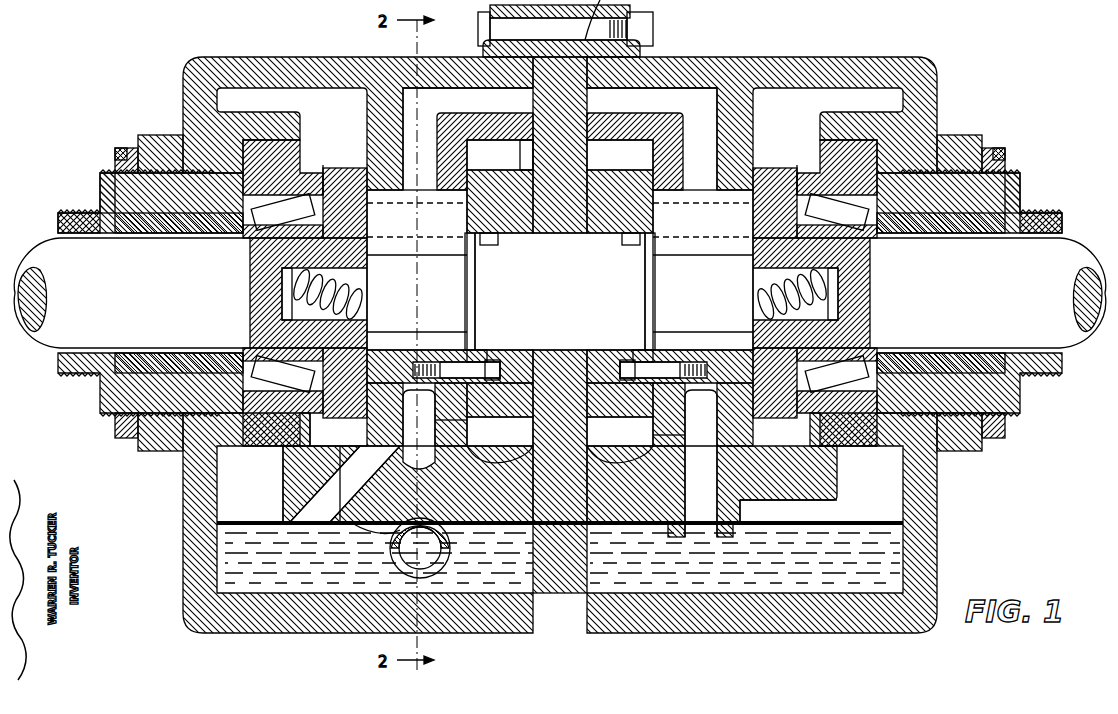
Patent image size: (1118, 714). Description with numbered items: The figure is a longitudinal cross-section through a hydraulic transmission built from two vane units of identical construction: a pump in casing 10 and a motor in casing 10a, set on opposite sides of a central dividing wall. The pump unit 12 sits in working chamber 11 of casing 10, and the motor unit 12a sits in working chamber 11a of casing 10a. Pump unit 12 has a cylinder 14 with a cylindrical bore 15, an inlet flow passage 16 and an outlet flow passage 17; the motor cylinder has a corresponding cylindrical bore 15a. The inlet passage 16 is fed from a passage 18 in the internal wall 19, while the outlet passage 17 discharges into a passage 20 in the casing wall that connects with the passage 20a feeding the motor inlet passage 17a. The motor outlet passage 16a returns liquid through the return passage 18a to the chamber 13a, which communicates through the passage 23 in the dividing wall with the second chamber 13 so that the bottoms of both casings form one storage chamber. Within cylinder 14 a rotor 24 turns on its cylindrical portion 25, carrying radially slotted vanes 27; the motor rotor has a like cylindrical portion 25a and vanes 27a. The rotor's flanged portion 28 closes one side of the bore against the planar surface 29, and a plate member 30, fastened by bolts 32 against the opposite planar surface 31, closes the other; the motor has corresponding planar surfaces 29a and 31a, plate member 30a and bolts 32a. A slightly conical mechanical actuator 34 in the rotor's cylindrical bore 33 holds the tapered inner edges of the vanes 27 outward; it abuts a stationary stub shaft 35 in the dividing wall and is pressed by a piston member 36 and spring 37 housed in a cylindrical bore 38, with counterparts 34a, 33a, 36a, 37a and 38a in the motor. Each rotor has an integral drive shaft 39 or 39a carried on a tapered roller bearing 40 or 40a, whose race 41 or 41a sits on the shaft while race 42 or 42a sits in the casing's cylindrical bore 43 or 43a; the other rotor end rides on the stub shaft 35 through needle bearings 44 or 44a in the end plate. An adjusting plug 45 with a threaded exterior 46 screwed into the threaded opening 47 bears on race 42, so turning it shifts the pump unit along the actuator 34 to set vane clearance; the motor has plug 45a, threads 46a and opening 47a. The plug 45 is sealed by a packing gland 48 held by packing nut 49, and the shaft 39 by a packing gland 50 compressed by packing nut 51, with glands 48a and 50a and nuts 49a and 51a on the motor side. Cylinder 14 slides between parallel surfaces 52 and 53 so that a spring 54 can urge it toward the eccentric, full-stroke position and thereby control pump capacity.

The casing 10 is at (291, 64).
The casing 10a is at (842, 64).
The working chamber 11 is at (487, 170).
The working chamber 11a is at (636, 170).
The vane type pump unit 12 is at (358, 173).
The motor unit 12a is at (760, 173).
The second chamber 13 is at (228, 492).
The chamber 13a is at (905, 503).
The cylinder 14 is at (468, 432).
The cylindrical bore 15 is at (419, 418).
The oil passage 15a is at (701, 418).
The inlet flow passage 16 is at (464, 440).
The outlet passage 16a is at (728, 432).
The outlet flow passage 17 is at (500, 150).
The inlet passage 17a is at (648, 150).
The passage 18 is at (333, 493).
The return passage 18a is at (745, 506).
The internal wall 19 is at (483, 496).
The passage 20 is at (475, 95).
The passage 20a is at (650, 95).
The passage 23 is at (560, 595).
The rotor 24 is at (340, 420).
The cylindrical portion 25 is at (410, 356).
The cylindrical portion 25a is at (712, 350).
The vane 27 is at (395, 212).
The vane 27a is at (725, 192).
The flanged portion 28 is at (358, 420).
The planar surface 29 is at (378, 484).
The planar surface 29a is at (758, 444).
The plate member 30 is at (505, 416).
The plate member 30a is at (620, 400).
The planar surface 31 is at (440, 420).
The planar surface 31a is at (650, 436).
The bolts 32 is at (485, 370).
The bolts 32a is at (642, 362).
The cylindrical bore 33 is at (468, 348).
The cylindrical bore 33a is at (652, 348).
The mechanical actuator 34 is at (462, 276).
The mechanical actuator 34a is at (656, 300).
The stub shaft 35 is at (561, 302).
The piston member 36 is at (360, 278).
The piston member 36a is at (780, 294).
The spring 37 is at (362, 288).
The spring 37a is at (774, 294).
The cylindrical bore 38 is at (282, 318).
The cylindrical bore 38a is at (838, 310).
The drive shaft 39 is at (56, 348).
The drive shaft 39a is at (1035, 320).
The tapered roller bearing 40 is at (283, 200).
The tapered roller bearing 40a is at (862, 204).
The race 41 is at (246, 238).
The race 41a is at (872, 238).
The race 42 is at (252, 180).
The race 42a is at (835, 178).
The cylindrical bore 43 is at (322, 168).
The cylindrical bore 43a is at (797, 165).
The needle bearings 44 is at (510, 234).
The needle bearings 44a is at (636, 236).
The plug 45 is at (100, 180).
The plug 45a is at (1020, 214).
The threaded exterior 46 is at (107, 174).
The threaded exterior 46a is at (1014, 176).
The threaded opening 47 is at (166, 136).
The threaded opening 47a is at (950, 137).
The packing gland 48 is at (128, 148).
The packing gland 48a is at (990, 148).
The packing nut 49 is at (117, 150).
The packing nut 49a is at (1004, 156).
The packing gland 50 is at (160, 236).
The packing gland 50a is at (945, 236).
The packing nut 51 is at (95, 236).
The packing nut 51a is at (1050, 220).
The parallel surface 52 is at (516, 155).
The parallel surface 53 is at (520, 450).
The spring 54 is at (450, 522).